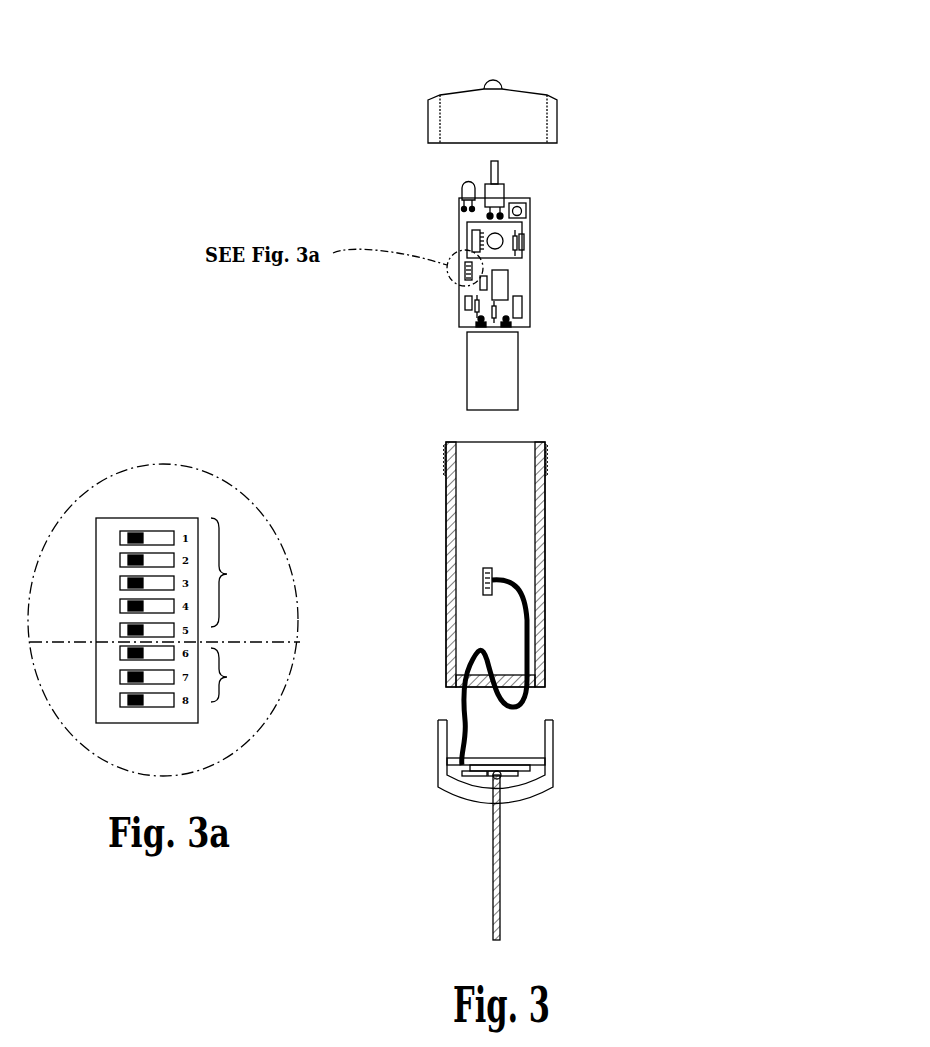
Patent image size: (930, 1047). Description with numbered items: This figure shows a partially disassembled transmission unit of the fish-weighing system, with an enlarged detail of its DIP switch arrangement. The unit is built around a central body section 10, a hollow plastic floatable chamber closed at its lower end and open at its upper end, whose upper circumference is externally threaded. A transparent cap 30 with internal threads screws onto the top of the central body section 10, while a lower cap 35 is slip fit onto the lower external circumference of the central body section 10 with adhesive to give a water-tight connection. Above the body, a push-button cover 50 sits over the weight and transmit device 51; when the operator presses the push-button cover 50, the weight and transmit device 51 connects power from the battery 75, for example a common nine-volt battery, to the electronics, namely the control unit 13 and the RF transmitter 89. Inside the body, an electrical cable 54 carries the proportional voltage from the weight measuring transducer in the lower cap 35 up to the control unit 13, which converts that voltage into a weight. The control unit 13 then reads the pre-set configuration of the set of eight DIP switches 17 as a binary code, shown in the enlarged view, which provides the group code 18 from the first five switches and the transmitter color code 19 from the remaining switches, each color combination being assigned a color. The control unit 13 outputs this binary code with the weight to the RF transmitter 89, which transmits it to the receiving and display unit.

In FIG. 3, the central body section 10 is at (546, 553).
In FIG. 3, the control unit 13 is at (523, 285).
In FIG. 3A, the set of eight DIP switches 17 is at (245, 497).
In FIG. 3A, the group code 18 is at (230, 573).
In FIG. 3A, the transmitter color code 19 is at (235, 669).
In FIG. 3, the transparent cap 30 is at (557, 128).
In FIG. 3, the lower cap 35 is at (555, 757).
In FIG. 3, the push-button cover 50 is at (493, 80).
In FIG. 3, the weight and transmit device 51 is at (504, 193).
In FIG. 3, the electrical cable 54 is at (540, 700).
In FIG. 3, the battery 75 is at (512, 398).
In FIG. 3, the RF transmitter 89 is at (514, 235).